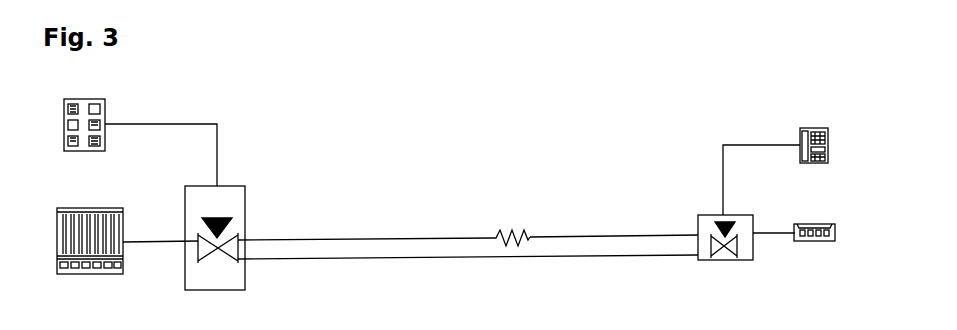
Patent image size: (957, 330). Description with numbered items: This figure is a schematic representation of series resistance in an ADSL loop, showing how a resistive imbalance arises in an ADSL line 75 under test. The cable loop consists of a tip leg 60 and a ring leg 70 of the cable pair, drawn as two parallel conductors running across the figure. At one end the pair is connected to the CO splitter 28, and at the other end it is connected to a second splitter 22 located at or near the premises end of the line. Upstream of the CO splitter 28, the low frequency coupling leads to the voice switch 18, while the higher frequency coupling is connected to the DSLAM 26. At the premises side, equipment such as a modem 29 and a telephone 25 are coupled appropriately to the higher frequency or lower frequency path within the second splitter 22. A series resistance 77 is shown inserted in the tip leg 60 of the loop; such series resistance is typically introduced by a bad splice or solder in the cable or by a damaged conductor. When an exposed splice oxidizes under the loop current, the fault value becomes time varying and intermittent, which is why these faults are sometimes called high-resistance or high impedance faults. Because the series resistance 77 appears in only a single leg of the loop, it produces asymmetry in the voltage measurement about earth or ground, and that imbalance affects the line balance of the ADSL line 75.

The voice switch 18 is at (106, 143).
The DSLAM 26 is at (112, 279).
The CO splitter 28 is at (246, 189).
The tip leg 60 is at (588, 237).
The ring leg 70 is at (607, 257).
The ADSL line 75 is at (397, 196).
The series resistance 77 is at (536, 234).
The second splitter 22 is at (698, 259).
The telephone 25 is at (796, 153).
The modem 29 is at (793, 233).